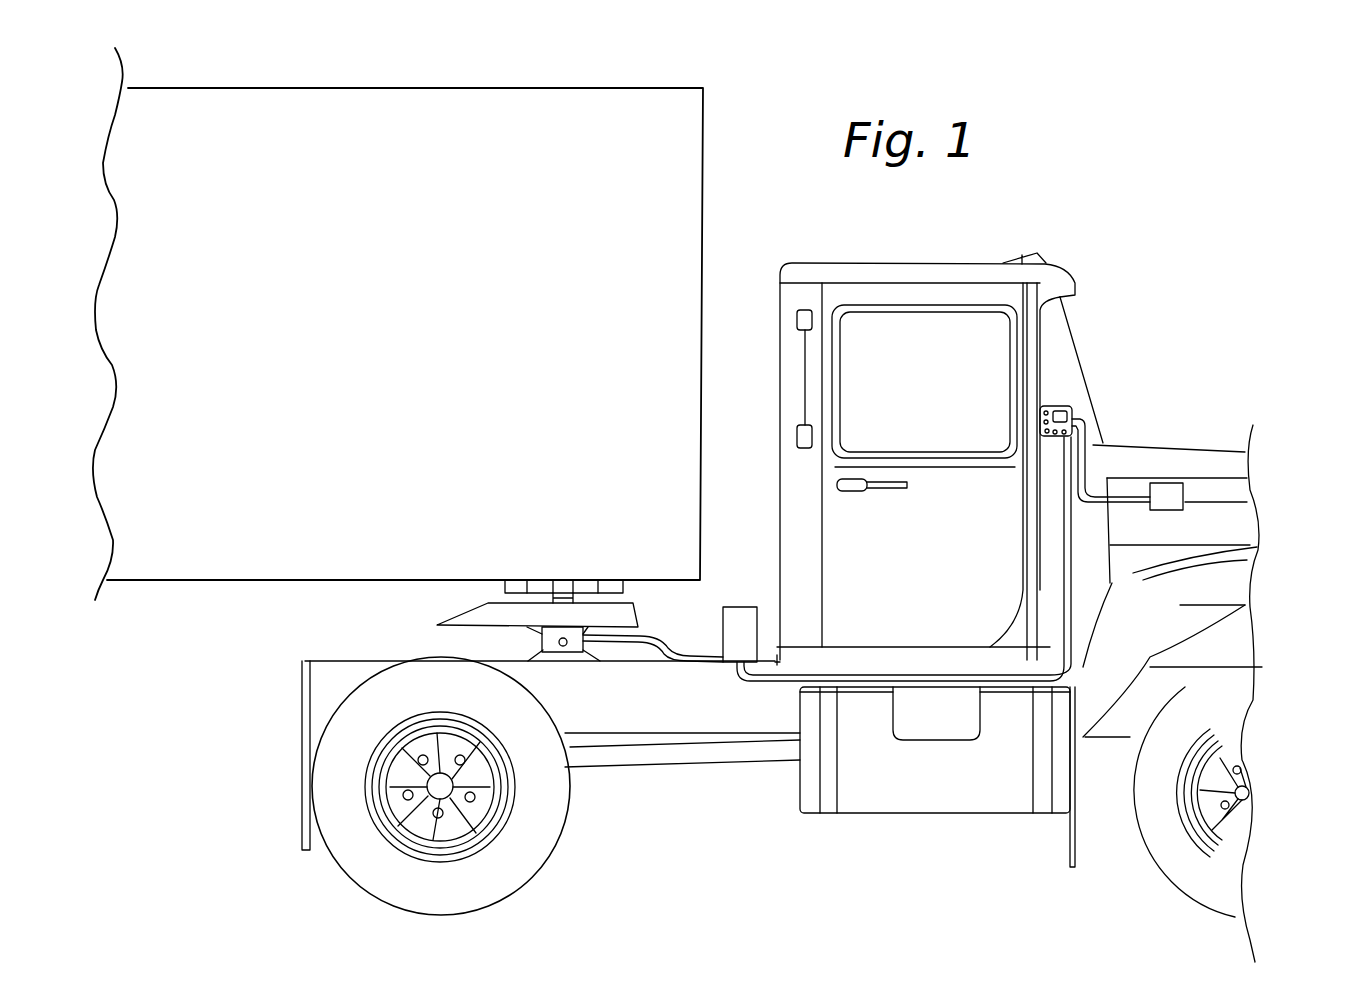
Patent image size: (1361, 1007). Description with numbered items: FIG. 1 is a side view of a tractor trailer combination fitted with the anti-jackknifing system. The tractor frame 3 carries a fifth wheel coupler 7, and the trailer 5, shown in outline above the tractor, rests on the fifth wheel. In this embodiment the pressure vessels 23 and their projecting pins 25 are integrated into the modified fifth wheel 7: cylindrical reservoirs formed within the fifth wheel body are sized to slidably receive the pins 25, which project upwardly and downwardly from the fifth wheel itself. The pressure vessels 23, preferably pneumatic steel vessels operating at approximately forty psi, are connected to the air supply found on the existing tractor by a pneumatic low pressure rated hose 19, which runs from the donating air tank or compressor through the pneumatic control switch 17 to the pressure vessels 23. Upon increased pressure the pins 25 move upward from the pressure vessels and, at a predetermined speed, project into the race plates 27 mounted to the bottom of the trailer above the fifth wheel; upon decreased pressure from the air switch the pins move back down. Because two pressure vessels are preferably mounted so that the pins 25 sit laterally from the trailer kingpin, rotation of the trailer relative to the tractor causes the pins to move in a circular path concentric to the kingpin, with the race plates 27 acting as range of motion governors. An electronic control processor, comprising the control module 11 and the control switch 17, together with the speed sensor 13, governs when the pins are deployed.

The tractor frame 3 is at (1132, 460).
The cargo body 5 is at (677, 150).
The fifth wheel coupler 7 is at (478, 620).
The control module 11 is at (1072, 411).
The speed sensor 13 is at (1177, 493).
The control switch 17 is at (740, 617).
The pneumatic low pressure rated hose 19 is at (650, 635).
The pressure vessels 23 is at (550, 643).
The pins 25 is at (567, 599).
The race plates 27 is at (517, 588).